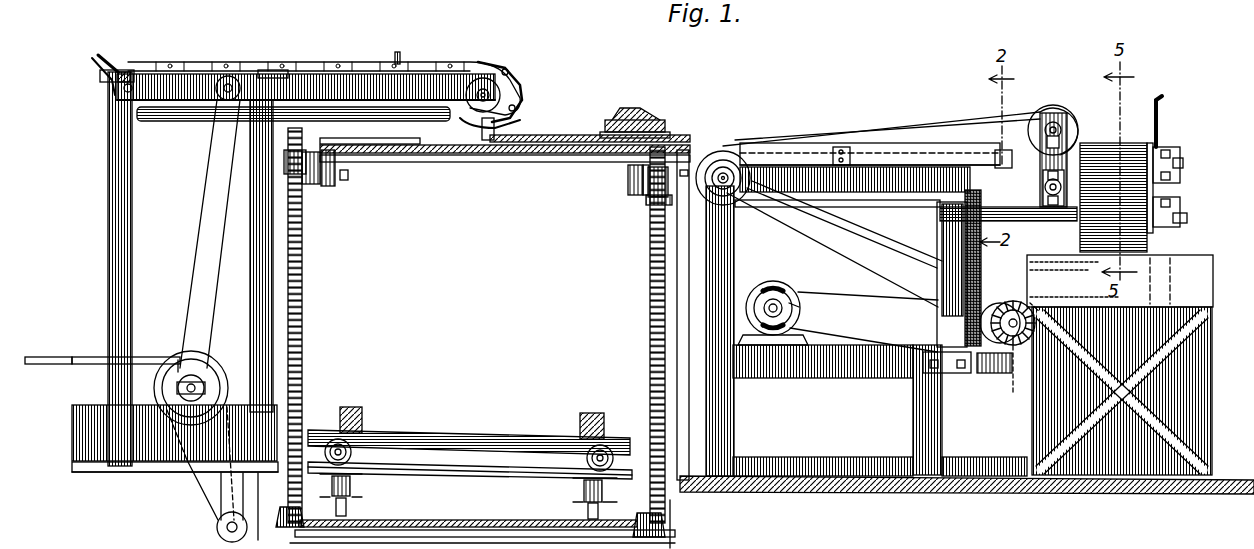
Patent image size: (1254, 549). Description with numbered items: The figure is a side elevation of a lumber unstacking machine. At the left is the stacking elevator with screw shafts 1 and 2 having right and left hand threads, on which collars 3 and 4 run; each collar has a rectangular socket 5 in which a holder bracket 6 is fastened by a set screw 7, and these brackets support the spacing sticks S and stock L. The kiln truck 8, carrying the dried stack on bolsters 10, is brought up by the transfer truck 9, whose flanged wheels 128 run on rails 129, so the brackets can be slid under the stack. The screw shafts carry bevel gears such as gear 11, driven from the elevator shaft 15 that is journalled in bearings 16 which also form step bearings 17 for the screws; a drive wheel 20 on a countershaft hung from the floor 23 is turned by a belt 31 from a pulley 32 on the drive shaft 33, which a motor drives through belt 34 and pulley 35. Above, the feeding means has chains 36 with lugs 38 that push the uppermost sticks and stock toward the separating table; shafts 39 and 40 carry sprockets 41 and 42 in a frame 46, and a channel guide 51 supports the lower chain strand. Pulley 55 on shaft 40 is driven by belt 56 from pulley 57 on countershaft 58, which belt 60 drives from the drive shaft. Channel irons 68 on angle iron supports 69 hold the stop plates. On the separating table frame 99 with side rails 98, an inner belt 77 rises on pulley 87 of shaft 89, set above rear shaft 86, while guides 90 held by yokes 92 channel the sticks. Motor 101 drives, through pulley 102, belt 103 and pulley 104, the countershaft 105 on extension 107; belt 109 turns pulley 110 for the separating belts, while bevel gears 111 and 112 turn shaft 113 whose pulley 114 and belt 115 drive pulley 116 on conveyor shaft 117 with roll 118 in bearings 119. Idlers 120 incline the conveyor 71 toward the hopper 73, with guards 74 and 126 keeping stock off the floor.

The screw shaft 1 is at (304, 292).
The screw shaft 2 is at (650, 292).
The collar 3 is at (302, 188).
The collar 4 is at (650, 190).
The rectangular socket 5 is at (338, 166).
The holder bracket 6 is at (328, 185).
The set screw 7 is at (350, 176).
The kiln truck 8 is at (446, 433).
The transfer truck 9 is at (460, 473).
The bolster 10 is at (362, 416).
The bevel gear 11 is at (640, 518).
The elevator shaft 15 is at (485, 539).
The bearing 16 is at (300, 544).
The step bearing 17 is at (686, 512).
The drive wheel 20 is at (230, 440).
The floor 23 is at (176, 467).
The belt 31 is at (200, 488).
The pulley 32 is at (178, 362).
The drive shaft 33 is at (482, 150).
The belt 34 is at (102, 350).
The pulley 35 is at (178, 386).
The chain 36 is at (345, 65).
The lug 38 is at (105, 70).
The shaft 39 is at (132, 86).
The shaft 40 is at (456, 95).
The sprocket 41 is at (122, 72).
The sprocket 42 is at (508, 82).
The frame 46 is at (158, 95).
The channel guide 51 is at (175, 122).
The pulley 55 is at (505, 122).
The belt 56 is at (268, 72).
The pulley 57 is at (228, 76).
The countershaft 58 is at (297, 85).
The belt 60 is at (195, 250).
The channel iron 68 is at (664, 130).
The angle iron support 69 is at (690, 414).
The conveyor 71 is at (1122, 144).
The hopper 73 is at (1208, 362).
The guard 74 is at (1210, 288).
The belt 77 is at (249, 507).
The rear shaft 86 is at (1036, 188).
The pulley 87 is at (1044, 108).
The shaft 89 is at (1058, 126).
The guide 90 is at (950, 156).
The yoke 92 is at (1004, 152).
The side rail 98 is at (922, 200).
The separating table frame 99 is at (742, 264).
The motor 101 is at (788, 292).
The pulley 102 is at (802, 307).
The belt 103 is at (872, 294).
The pulley 104 is at (1014, 300).
The countershaft 105 is at (1032, 304).
The extension 107 is at (916, 418).
The belt 109 is at (870, 232).
The pulley 110 is at (752, 200).
The bevel gear 111 is at (1004, 376).
The bevel gear 112 is at (996, 364).
The shaft 113 is at (938, 325).
The pulley 114 is at (945, 378).
The belt 115 is at (981, 262).
The pulley 116 is at (972, 200).
The conveyor shaft 117 is at (1020, 222).
The roll 118 is at (1176, 192).
The bearing 119 is at (1190, 206).
The idler 120 is at (1183, 150).
The guard 126 is at (1160, 98).
The flanged wheel 128 is at (352, 484).
The rail 129 is at (350, 516).
The stock L is at (520, 152).
The spacing stick S is at (565, 152).